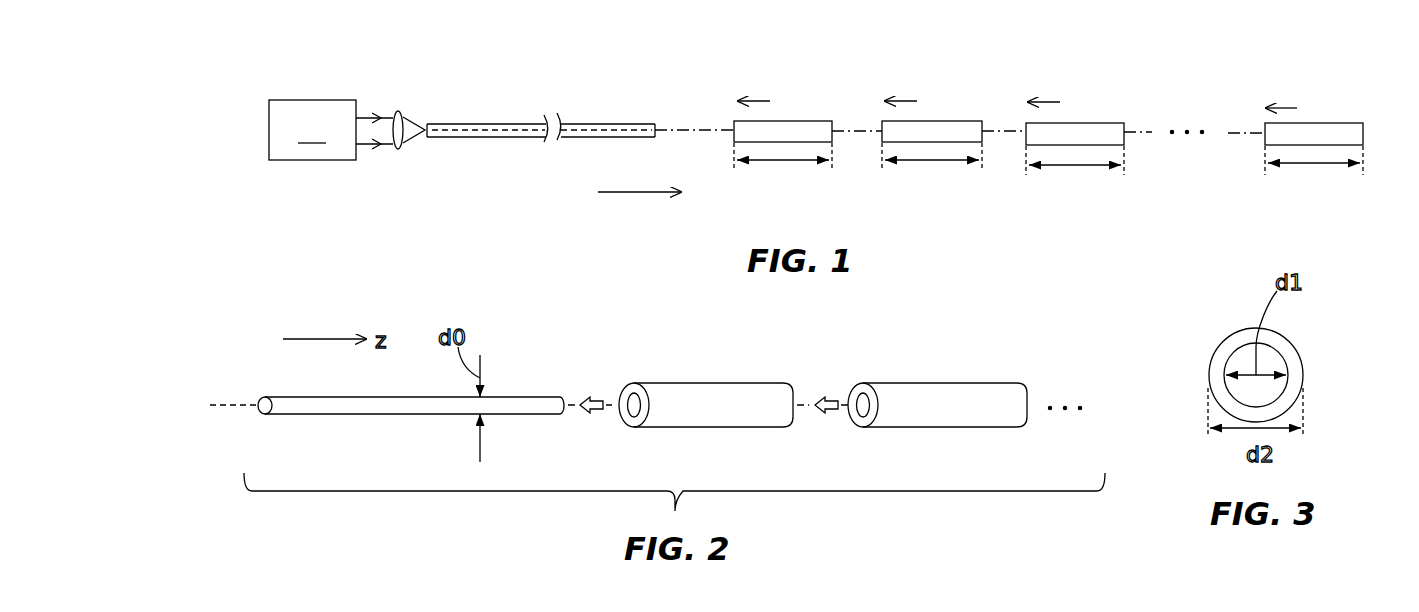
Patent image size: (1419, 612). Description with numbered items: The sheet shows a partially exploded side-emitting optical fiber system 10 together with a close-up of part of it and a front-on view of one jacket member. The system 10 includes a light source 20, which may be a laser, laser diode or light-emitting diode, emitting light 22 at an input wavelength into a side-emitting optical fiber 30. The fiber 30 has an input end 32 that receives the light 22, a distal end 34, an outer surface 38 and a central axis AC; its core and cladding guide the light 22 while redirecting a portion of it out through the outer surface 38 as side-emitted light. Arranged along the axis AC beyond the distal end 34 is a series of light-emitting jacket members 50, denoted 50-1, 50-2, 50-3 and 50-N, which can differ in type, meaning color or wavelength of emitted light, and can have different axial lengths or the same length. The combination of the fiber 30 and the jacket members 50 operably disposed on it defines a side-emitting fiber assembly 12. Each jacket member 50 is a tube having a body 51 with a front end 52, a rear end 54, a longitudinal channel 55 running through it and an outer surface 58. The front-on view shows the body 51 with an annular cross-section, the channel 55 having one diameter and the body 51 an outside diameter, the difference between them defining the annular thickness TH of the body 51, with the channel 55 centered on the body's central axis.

In FIG. 1, the side-emitting optical fiber system 10 is at (357, 43).
In FIG. 2, the side-emitting fiber assembly 12 is at (921, 611).
In FIG. 1, the light source 20 is at (312, 130).
In FIG. 1, the light 22 is at (372, 146).
In FIG. 1, the side-emitting optical fiber 30 is at (497, 112).
In FIG. 1, the input end 32 is at (425, 132).
In FIG. 2, the input end 32 is at (262, 398).
In FIG. 1, the distal end 34 is at (655, 126).
In FIG. 2, the distal end 34 is at (565, 397).
In FIG. 1, the outer surface 38 is at (503, 138).
In FIG. 2, the outer surface 38 is at (345, 406).
In FIG. 1, the central axis AC is at (585, 130).
In FIG. 2, the central axis AC is at (232, 407).
In FIG. 1, the light-emitting jacket member 50 is at (727, 52).
In FIG. 3, the light-emitting jacket member 50 is at (1237, 312).
In FIG. 1, the first light-emitting jacket member 50-1 is at (795, 121).
In FIG. 2, the first light-emitting jacket member 50-1 is at (690, 378).
In FIG. 1, the second light-emitting jacket member 50-2 is at (938, 121).
In FIG. 2, the second light-emitting jacket member 50-2 is at (893, 378).
In FIG. 1, the third light-emitting jacket member 50-3 is at (1079, 123).
In FIG. 1, the Nth light-emitting jacket member 50-N is at (1310, 123).
In FIG. 3, the body 51 is at (1216, 362).
In FIG. 2, the front end 52 is at (627, 426).
In FIG. 2, the rear end 54 is at (795, 385).
In FIG. 2, the longitudinal channel 55 is at (630, 402).
In FIG. 3, the longitudinal channel 55 is at (1270, 388).
In FIG. 3, the outer surface 58 is at (1289, 340).
In FIG. 3, the annular thickness TH is at (1247, 367).